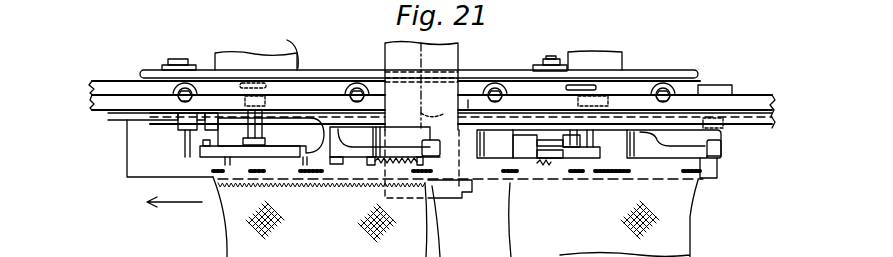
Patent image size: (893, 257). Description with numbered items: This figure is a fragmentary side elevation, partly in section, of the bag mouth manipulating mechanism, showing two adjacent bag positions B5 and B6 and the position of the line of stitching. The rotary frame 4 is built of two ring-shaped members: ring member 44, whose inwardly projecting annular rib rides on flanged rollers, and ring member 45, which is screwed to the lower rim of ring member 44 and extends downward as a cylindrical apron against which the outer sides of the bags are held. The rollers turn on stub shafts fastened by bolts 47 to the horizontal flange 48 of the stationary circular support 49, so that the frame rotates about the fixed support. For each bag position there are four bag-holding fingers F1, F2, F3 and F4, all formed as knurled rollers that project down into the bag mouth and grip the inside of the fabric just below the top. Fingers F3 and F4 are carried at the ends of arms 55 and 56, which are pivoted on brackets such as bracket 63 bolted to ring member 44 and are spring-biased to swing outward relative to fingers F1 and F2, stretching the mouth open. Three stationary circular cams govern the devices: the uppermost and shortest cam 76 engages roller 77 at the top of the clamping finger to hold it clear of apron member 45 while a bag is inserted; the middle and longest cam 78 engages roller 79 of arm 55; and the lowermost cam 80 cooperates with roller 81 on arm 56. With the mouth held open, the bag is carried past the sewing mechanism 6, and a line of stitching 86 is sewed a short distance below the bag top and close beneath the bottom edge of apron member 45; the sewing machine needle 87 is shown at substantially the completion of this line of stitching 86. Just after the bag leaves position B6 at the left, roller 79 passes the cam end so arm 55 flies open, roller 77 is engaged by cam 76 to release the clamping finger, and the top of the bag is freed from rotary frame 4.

The rotary frame 4 is at (469, 108).
The sewing mechanism 6 is at (386, 48).
The ring member 44 is at (730, 89).
The ring member (apron member) 45 is at (130, 184).
The bolts 47 is at (185, 60).
The horizontal flange 48 is at (678, 71).
The stationary circular support 49 is at (572, 57).
The arm 55 is at (414, 158).
The arm 56 is at (272, 146).
The bracket 63 is at (176, 101).
The cam 76 is at (92, 84).
The roller 77 is at (248, 65).
The cam 78 is at (92, 102).
The roller 79 is at (742, 143).
The cam 80 is at (318, 115).
The roller 81 is at (245, 101).
The line of stitching 86 is at (333, 186).
The sewing machine needle 87 is at (434, 196).
The bag position B5 is at (692, 215).
The bag position B6 is at (236, 238).
The bag-holding finger F1 is at (212, 171).
The bag-holding finger F2 is at (310, 178).
The bag-holding finger F3 is at (453, 207).
The bag-holding finger F4 is at (279, 204).